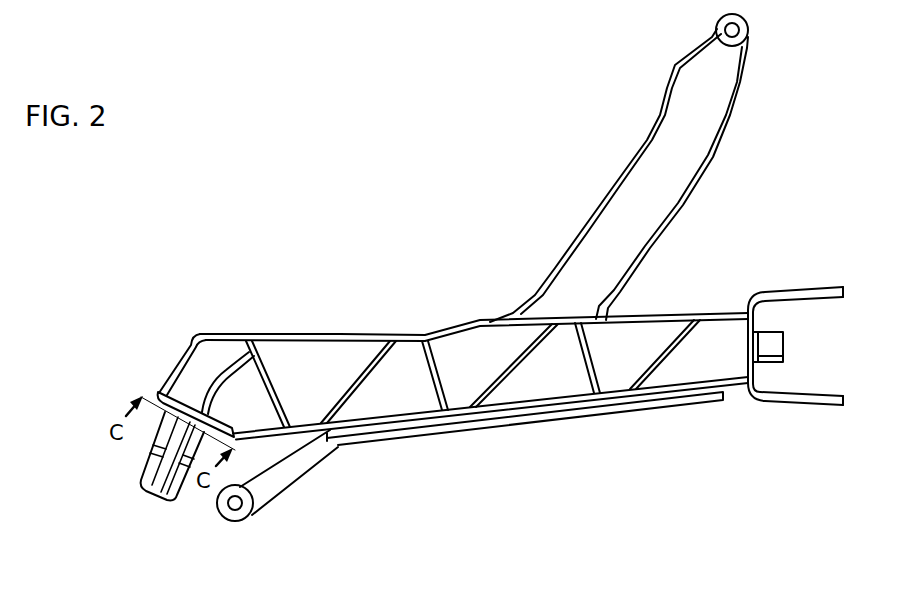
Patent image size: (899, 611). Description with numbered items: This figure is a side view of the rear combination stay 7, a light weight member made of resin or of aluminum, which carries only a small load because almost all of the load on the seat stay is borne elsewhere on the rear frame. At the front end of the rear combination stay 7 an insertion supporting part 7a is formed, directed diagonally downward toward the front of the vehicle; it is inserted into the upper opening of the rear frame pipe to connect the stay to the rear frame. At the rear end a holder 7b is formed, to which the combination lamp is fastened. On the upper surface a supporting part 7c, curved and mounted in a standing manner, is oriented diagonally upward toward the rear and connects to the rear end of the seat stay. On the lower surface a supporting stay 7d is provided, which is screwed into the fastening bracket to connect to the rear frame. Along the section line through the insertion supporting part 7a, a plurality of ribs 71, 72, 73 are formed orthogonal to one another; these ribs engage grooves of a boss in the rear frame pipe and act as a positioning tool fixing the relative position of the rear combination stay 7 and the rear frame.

The rear combination stay 7 is at (371, 322).
The insertion supporting part 7a is at (156, 436).
The holder 7b is at (790, 403).
The supporting part 7c is at (708, 174).
The supporting stay 7d is at (310, 468).
The rib 71 is at (140, 480).
The rib 72 is at (152, 493).
The rib 73 is at (163, 500).